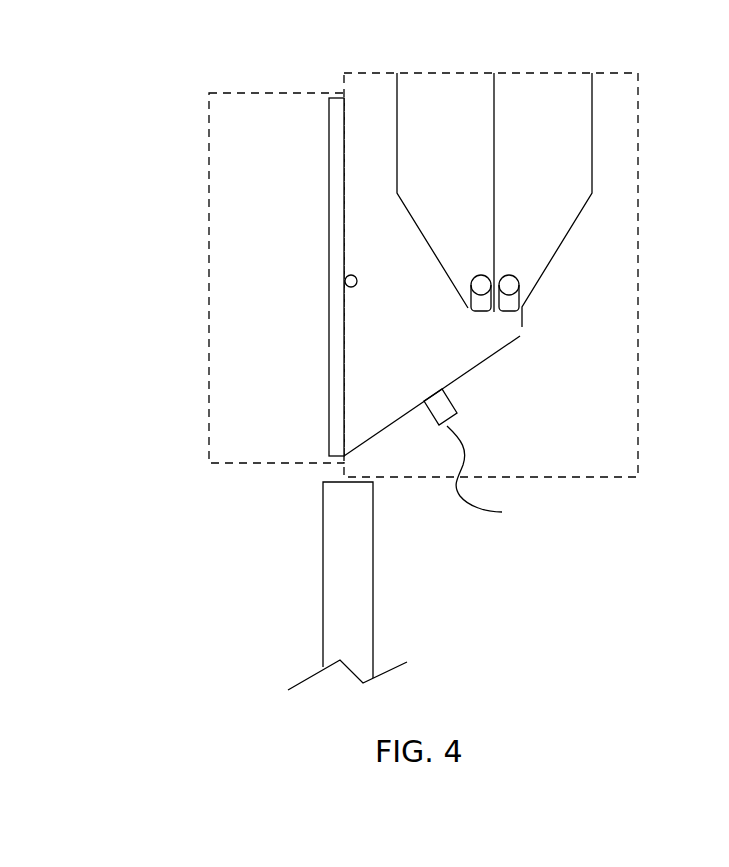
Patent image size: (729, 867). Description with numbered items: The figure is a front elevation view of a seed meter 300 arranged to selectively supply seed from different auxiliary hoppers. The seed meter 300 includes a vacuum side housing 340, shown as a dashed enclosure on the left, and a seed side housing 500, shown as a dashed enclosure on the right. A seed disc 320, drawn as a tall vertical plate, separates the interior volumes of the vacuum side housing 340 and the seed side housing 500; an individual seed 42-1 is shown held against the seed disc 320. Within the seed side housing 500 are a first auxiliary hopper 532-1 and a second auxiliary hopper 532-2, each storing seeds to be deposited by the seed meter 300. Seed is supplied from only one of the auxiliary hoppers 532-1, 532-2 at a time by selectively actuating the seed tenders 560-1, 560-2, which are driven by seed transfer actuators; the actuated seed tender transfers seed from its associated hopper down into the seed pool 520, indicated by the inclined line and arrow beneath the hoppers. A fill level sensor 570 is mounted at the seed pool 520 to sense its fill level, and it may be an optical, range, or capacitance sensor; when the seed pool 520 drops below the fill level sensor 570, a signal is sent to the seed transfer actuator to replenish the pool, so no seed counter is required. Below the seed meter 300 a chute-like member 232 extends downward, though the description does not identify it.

The seed meter 300 is at (175, 305).
The vacuum side housing 340 is at (208, 193).
The seed side housing 500 is at (640, 200).
The seed disc 320 is at (328, 213).
The seed 42-1 is at (349, 288).
The first auxiliary hopper 532-1 is at (478, 120).
The second auxiliary hopper 532-2 is at (571, 120).
The first seed tender 560-1 is at (482, 314).
The second seed tender 560-2 is at (511, 314).
The seed pool 520 is at (362, 406).
The fill level sensor 570 is at (481, 455).
The collection chute 232 is at (375, 623).